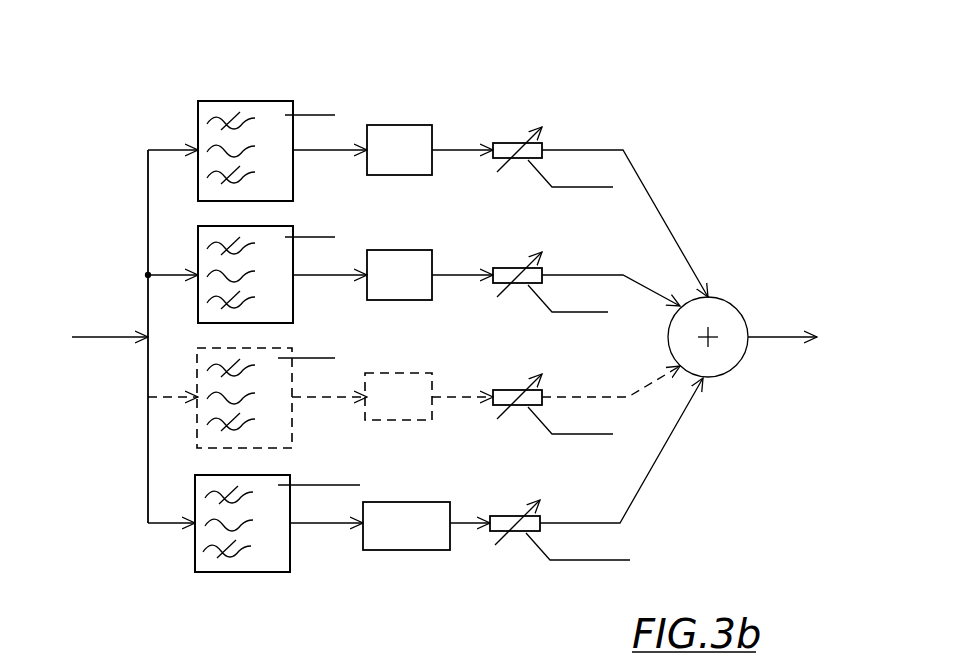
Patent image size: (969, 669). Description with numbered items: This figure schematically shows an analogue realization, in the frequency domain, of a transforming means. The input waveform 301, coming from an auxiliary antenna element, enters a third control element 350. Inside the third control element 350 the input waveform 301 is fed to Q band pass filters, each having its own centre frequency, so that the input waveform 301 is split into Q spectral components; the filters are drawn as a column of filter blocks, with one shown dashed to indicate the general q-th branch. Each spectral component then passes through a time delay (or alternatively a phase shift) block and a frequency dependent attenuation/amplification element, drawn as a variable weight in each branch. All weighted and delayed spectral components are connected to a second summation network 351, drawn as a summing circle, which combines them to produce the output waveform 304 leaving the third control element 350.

The input waveform 301 is at (90, 337).
The output waveform 304 is at (770, 340).
The third control element 350 is at (513, 88).
The second summation network 351 is at (738, 310).